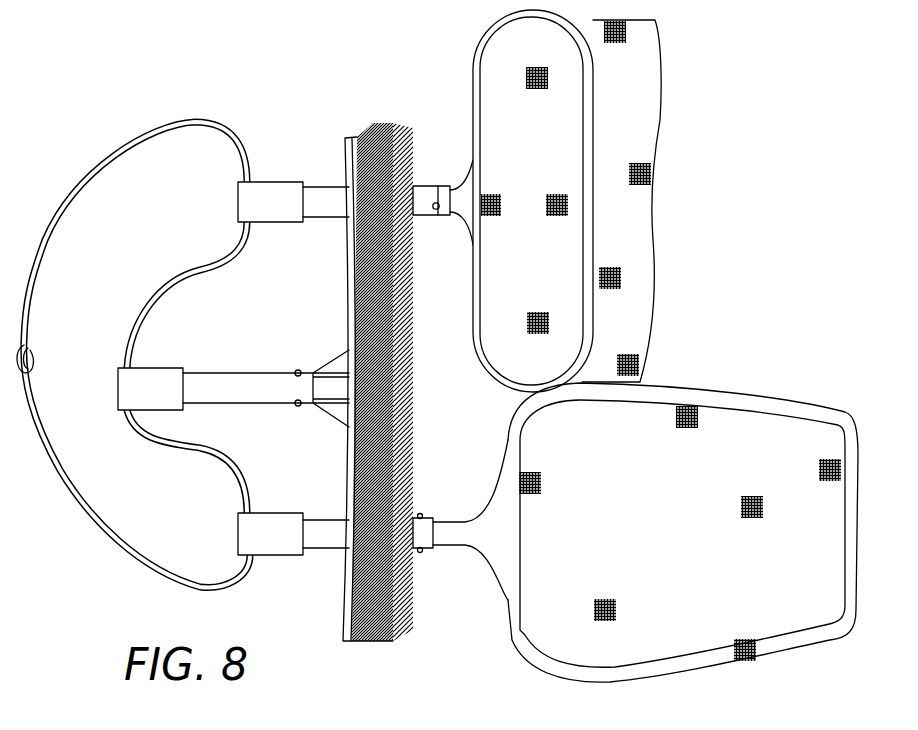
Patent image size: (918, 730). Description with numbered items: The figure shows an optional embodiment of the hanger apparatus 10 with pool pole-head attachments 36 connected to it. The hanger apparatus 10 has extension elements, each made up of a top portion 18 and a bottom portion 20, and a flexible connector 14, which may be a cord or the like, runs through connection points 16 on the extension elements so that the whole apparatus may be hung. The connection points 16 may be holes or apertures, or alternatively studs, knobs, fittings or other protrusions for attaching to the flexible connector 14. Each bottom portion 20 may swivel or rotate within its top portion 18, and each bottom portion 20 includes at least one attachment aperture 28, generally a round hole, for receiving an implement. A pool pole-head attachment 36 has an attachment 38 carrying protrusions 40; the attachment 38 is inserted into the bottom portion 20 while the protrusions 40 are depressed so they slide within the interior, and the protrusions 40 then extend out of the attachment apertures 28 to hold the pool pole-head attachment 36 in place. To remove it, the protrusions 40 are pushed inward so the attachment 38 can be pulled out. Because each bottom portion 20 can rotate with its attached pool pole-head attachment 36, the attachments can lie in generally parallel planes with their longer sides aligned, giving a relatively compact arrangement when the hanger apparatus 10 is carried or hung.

The hanger apparatus 10 is at (140, 110).
The flexible connector 14 is at (96, 172).
The connection points 16 is at (258, 549).
The top portion 18 is at (125, 390).
The bottom portion 20 is at (250, 380).
The attachment aperture 28 is at (436, 203).
The pool pole-head attachment 36 is at (477, 60).
The attachment 38 is at (460, 180).
The protrusions 40 is at (436, 211).